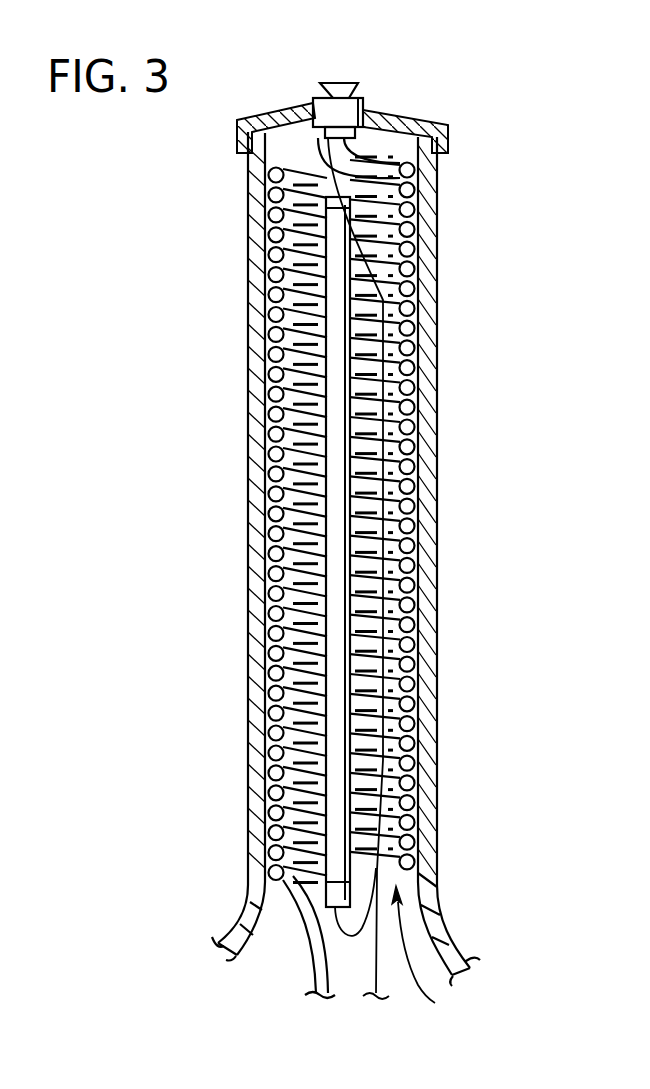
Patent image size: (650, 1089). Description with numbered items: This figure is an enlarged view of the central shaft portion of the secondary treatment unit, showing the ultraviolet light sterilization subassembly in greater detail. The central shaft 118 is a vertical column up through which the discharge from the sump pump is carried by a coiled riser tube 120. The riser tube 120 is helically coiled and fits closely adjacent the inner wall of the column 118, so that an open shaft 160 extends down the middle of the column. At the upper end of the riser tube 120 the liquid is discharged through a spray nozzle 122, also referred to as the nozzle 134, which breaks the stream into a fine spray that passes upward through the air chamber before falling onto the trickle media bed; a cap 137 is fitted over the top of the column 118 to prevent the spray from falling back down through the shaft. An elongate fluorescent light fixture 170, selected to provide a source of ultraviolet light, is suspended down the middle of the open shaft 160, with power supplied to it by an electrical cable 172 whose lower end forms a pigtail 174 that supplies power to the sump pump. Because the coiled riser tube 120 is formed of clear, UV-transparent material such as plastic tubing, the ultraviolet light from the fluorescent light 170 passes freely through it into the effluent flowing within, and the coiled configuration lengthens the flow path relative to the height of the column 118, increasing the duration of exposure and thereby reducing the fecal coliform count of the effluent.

The central shaft 118 is at (425, 355).
The coiled riser tube 120 is at (402, 382).
The spray nozzle 122 is at (347, 86).
The nozzle 134 is at (367, 100).
The cap 137 is at (412, 121).
The open shaft 160 is at (428, 952).
The fluorescent light fixture 170 is at (338, 438).
The electrical cable 172 is at (413, 457).
The pigtail 174 is at (378, 957).